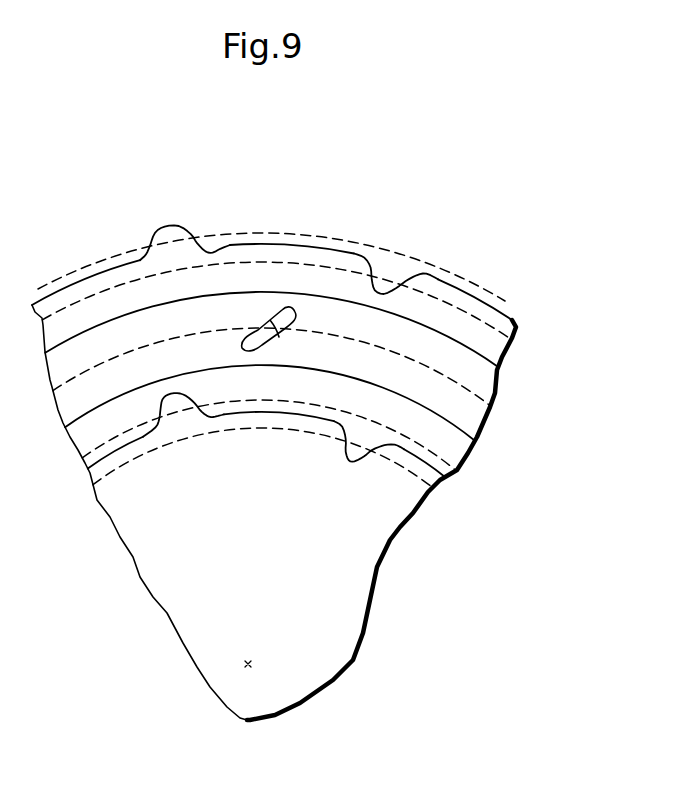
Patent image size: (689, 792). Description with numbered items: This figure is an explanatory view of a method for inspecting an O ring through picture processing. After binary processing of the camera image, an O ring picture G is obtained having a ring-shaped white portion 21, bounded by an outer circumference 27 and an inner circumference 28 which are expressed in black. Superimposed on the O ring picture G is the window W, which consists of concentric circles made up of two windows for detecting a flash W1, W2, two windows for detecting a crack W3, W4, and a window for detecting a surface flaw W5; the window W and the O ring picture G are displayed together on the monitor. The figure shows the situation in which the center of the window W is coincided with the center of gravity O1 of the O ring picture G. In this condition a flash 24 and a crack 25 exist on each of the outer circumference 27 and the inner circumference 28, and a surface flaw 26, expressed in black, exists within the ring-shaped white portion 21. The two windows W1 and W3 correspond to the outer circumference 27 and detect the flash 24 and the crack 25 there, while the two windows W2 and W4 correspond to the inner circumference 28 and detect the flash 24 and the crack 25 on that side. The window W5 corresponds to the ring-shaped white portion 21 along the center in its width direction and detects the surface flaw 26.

The ring-shaped white portion 21 is at (334, 387).
The flash 24 is at (193, 236).
The crack 25 is at (393, 293).
The surface flaw 26 is at (263, 349).
The outer circumference 27 is at (268, 235).
The inner circumference 28 is at (136, 457).
The window W is at (132, 234).
The window for detecting a flash W1 is at (487, 279).
The window for detecting a flash W2 is at (418, 490).
The window for detecting a crack W3 is at (505, 307).
The window for detecting a crack W4 is at (444, 463).
The window for detecting a surface flaw W5 is at (492, 400).
The O ring picture G is at (316, 240).
The center of gravity O1 is at (295, 658).